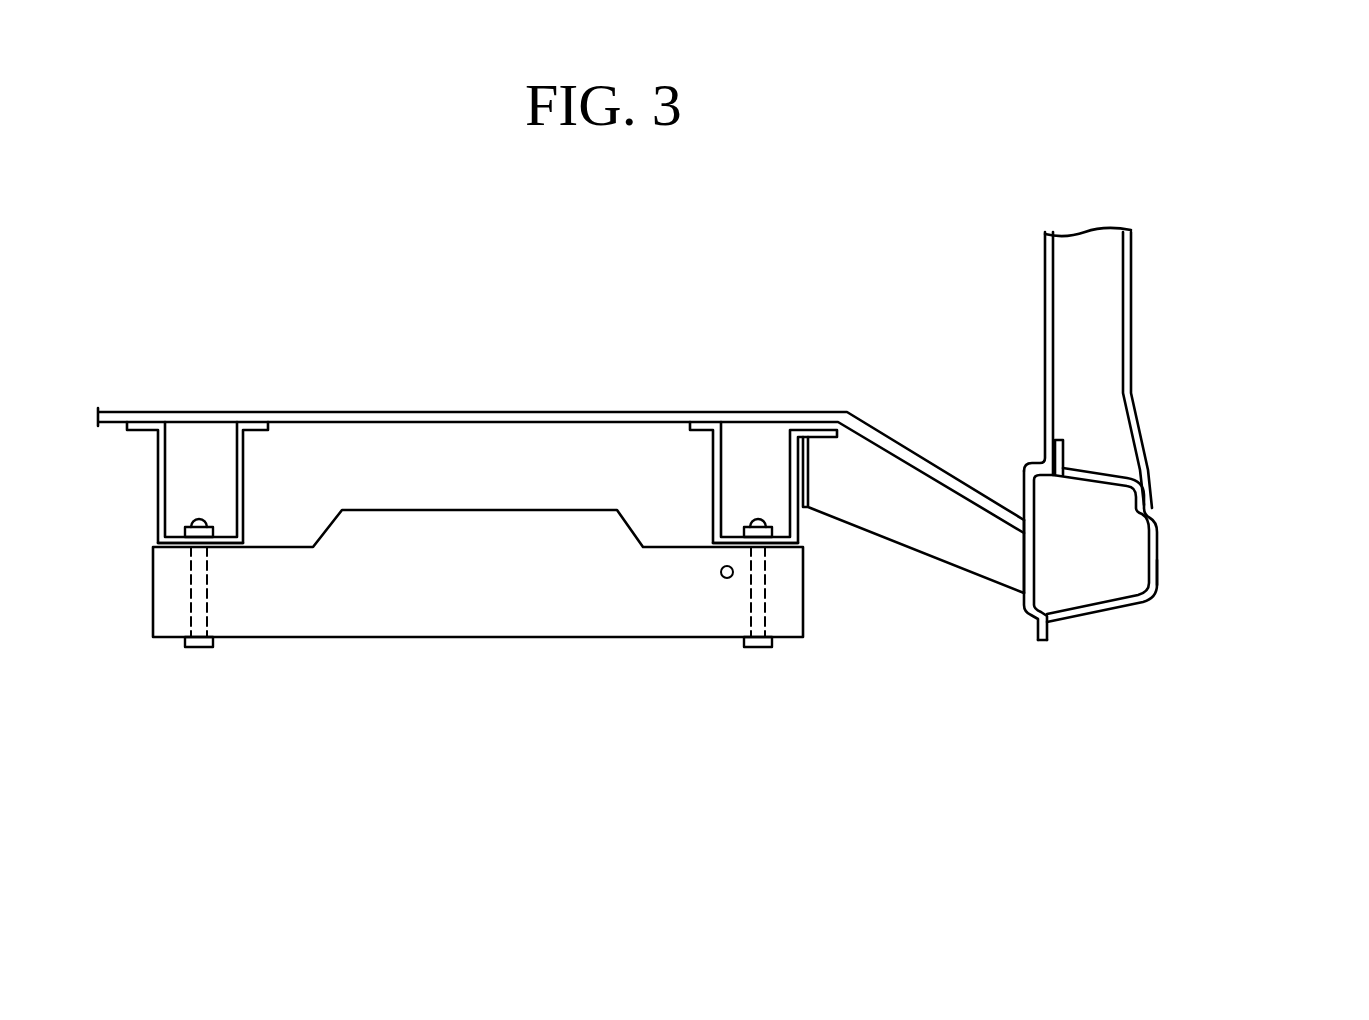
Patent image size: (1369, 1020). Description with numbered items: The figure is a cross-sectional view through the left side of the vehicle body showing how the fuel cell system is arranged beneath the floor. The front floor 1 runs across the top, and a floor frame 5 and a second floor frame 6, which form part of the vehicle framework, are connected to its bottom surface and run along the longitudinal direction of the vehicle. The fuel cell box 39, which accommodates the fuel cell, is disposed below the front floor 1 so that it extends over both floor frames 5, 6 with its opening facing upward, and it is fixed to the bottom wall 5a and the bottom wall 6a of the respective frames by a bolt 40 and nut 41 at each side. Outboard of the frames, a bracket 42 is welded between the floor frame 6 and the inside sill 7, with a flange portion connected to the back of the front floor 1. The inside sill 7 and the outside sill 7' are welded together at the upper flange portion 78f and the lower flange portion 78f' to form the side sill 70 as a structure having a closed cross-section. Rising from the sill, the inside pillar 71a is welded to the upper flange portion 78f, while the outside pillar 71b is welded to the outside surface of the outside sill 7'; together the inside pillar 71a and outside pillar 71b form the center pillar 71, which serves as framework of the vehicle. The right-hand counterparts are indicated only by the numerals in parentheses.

The front floor 1 is at (637, 412).
The floor frame 5 is at (155, 488).
The bottom wall 5a is at (177, 548).
The floor frame 6 is at (808, 460).
The bottom wall 6a is at (777, 573).
The fuel cell box 39 is at (578, 640).
The bolt 40 is at (200, 650).
The nut 41 is at (215, 527).
The bracket 42 is at (927, 560).
The inside sill 7 is at (990, 583).
The outside sill 7' is at (1183, 616).
The side sill 70 is at (1022, 623).
The center pillar 71 is at (1094, 352).
The inside pillar 71a is at (1047, 280).
The outside pillar 71b is at (1130, 376).
The flange portion 78f is at (1152, 449).
The flange portion 78f' is at (1105, 676).